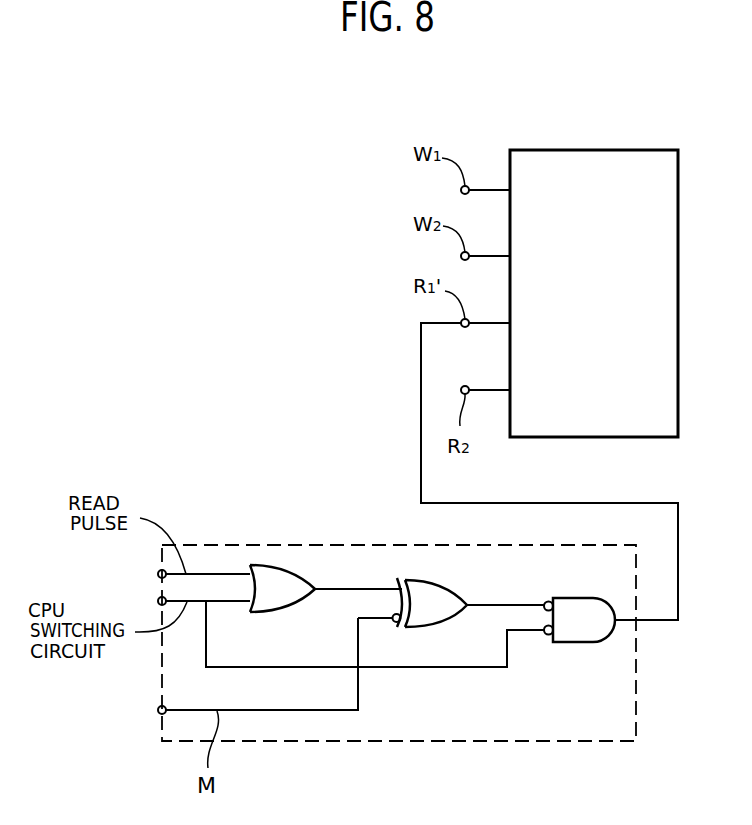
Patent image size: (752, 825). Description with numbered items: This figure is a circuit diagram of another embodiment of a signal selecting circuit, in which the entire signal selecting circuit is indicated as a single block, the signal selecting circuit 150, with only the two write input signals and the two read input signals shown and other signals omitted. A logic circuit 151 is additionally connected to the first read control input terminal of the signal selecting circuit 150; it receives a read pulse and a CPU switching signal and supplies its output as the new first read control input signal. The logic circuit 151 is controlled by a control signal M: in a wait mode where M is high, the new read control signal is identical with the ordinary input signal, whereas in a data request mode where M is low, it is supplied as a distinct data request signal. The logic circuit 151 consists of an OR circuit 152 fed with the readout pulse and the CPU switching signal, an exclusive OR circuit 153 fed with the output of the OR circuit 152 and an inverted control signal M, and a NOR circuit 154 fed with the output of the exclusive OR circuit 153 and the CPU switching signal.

The signal selecting circuit 150 is at (573, 150).
The logic circuit 151 is at (275, 545).
The OR circuit 152 is at (270, 613).
The exclusive OR circuit 153 is at (430, 628).
The NOR circuit 154 is at (570, 642).